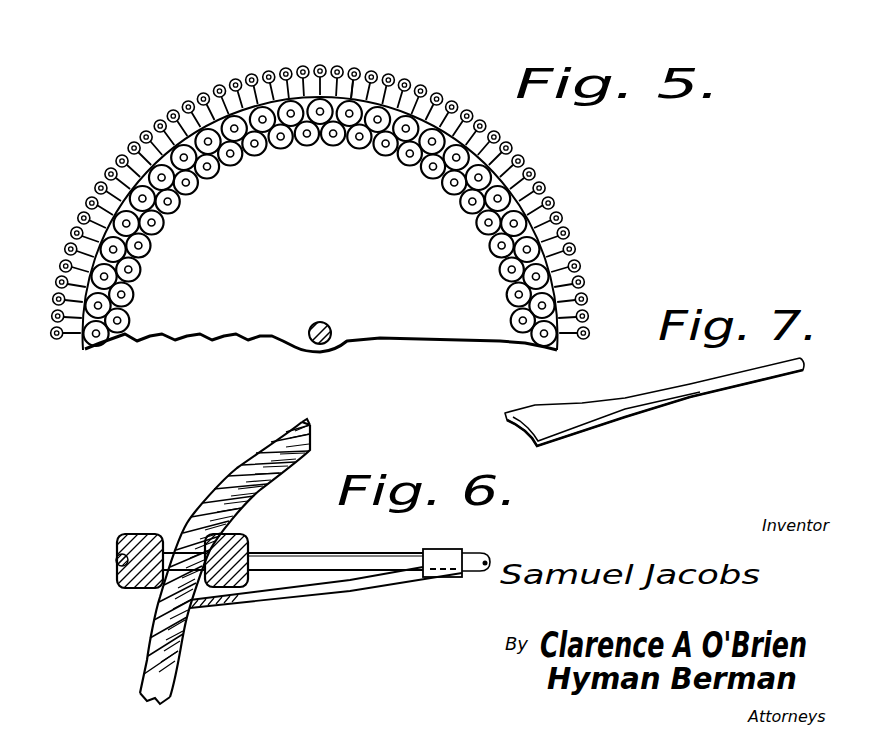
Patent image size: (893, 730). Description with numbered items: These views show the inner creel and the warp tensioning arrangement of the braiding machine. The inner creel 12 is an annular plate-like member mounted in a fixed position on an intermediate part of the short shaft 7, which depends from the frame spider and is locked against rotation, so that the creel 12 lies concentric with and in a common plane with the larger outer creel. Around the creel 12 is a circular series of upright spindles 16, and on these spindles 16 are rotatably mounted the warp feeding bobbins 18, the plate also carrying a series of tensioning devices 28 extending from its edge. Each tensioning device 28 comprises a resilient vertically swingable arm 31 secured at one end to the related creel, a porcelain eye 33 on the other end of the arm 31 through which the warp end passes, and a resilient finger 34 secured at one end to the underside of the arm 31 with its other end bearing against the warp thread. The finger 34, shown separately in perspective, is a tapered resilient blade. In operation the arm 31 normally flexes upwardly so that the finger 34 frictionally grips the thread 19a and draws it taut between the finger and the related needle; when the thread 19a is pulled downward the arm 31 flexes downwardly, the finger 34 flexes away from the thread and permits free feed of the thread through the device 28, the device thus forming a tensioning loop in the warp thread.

In FIG. 5, the short shaft 7 is at (330, 328).
In FIG. 5, the inner creel 12 is at (319, 224).
In FIG. 5, the upright spindles 16 is at (471, 202).
In FIG. 5, the warp feeding bobbins 18 is at (401, 164).
In FIG. 5, the tensioning devices 28 is at (355, 66).
In FIG. 6, the tensioning devices 28 is at (406, 584).
In FIG. 5, the resilient vertically swingable arm 31 is at (533, 170).
In FIG. 6, the resilient vertically swingable arm 31 is at (308, 568).
In FIG. 5, the porcelain eye 33 is at (467, 116).
In FIG. 6, the porcelain eye 33 is at (127, 590).
In FIG. 7, the resilient finger 34 is at (700, 396).
In FIG. 6, the resilient finger 34 is at (247, 607).
In FIG. 6, the warp thread 19a is at (263, 483).